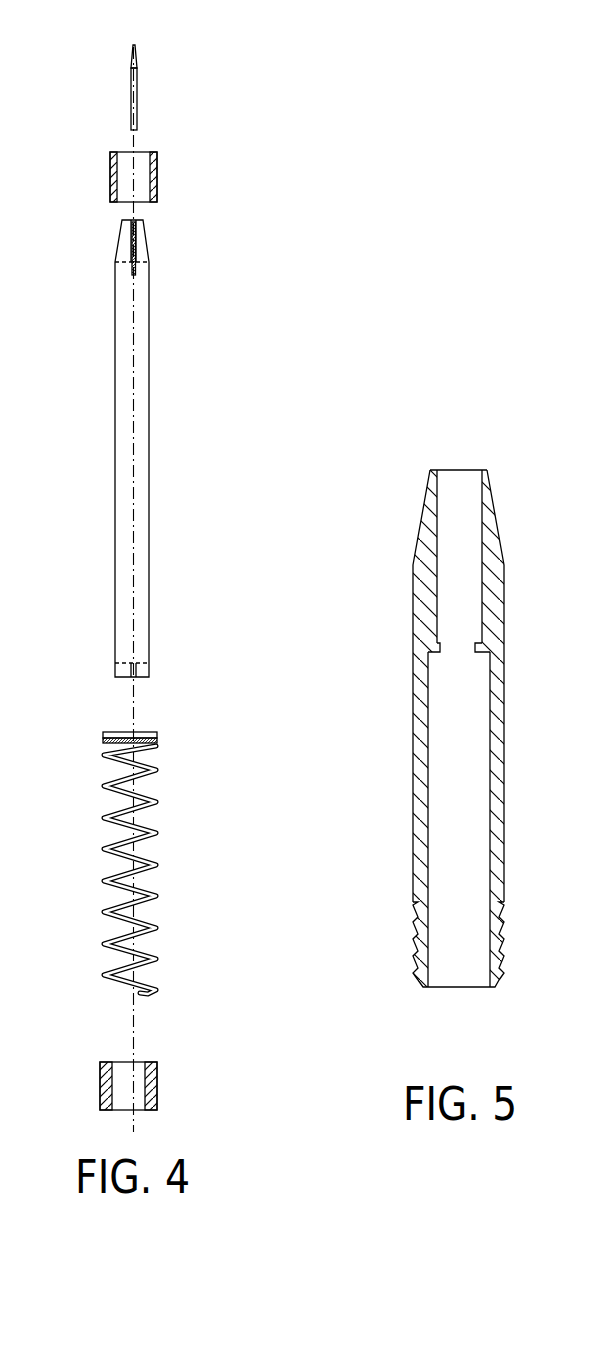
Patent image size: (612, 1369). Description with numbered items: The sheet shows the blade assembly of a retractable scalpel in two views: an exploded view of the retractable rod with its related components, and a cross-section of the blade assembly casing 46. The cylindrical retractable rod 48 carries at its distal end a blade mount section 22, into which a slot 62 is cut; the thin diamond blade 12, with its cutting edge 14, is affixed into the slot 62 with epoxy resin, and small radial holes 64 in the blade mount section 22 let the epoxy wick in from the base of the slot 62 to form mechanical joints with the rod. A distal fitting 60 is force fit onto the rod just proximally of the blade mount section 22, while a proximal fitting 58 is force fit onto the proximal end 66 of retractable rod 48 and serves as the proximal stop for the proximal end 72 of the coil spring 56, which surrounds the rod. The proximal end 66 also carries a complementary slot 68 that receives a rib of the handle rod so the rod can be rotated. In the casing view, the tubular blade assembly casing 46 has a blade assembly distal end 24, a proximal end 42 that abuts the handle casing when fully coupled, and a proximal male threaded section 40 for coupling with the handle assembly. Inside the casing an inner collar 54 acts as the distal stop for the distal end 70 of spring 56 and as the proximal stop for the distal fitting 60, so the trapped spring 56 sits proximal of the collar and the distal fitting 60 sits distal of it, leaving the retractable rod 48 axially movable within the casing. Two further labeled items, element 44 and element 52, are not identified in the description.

In FIG. 4, the blade 12 is at (120, 99).
In FIG. 4, the cutting edge 14 is at (122, 46).
In FIG. 4, the blade mount section 22 is at (104, 248).
In FIG. 5, the blade assembly distal end 24 is at (430, 470).
In FIG. 5, the proximal male threaded section 40 is at (500, 960).
In FIG. 5, the proximal end of blade assembly casing 42 is at (504, 905).
In FIG. 4, the needle carrier assembly 44 is at (141, 369).
In FIG. 5, the blade assembly casing 46 is at (442, 706).
In FIG. 4, the retractable rod 48 is at (133, 448).
In FIG. 5, the distal bore opening 52 is at (472, 480).
In FIG. 5, the inner collar 54 is at (470, 642).
In FIG. 4, the coil spring 56 is at (165, 876).
In FIG. 4, the proximal fitting 58 is at (157, 1080).
In FIG. 4, the distal fitting 60 is at (157, 183).
In FIG. 4, the slot 62 is at (138, 248).
In FIG. 4, the radial holes 64 is at (140, 274).
In FIG. 4, the proximal end of retractable rod 66 is at (118, 685).
In FIG. 4, the complementary slot 68 is at (133, 677).
In FIG. 4, the distal end of spring 70 is at (105, 732).
In FIG. 4, the proximal end of spring 72 is at (142, 994).